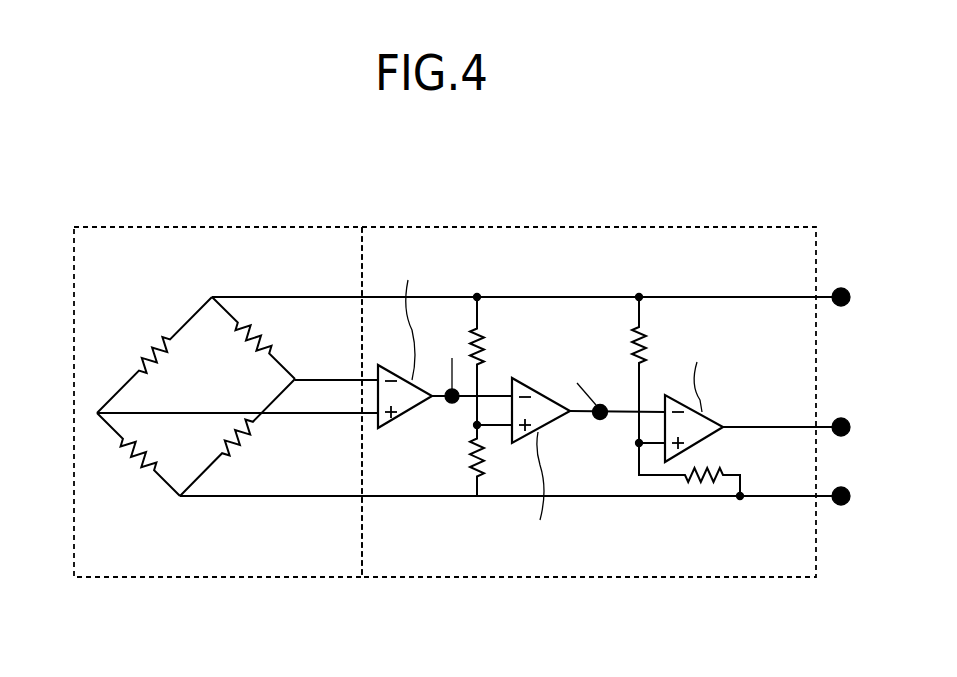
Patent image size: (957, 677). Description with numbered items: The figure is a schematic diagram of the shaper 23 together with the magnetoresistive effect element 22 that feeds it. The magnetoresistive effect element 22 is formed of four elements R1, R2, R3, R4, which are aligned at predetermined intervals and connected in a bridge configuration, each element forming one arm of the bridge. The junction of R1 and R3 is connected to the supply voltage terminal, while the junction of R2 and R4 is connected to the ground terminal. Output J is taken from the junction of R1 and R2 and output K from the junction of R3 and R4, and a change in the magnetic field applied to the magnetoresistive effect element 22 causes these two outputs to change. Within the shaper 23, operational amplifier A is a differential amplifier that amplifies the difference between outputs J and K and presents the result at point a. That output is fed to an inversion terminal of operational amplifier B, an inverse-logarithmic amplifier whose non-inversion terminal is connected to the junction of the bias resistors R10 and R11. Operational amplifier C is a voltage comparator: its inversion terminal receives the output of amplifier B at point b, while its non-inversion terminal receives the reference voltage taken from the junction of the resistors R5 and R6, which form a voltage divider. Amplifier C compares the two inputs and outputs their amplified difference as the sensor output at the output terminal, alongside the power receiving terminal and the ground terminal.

The magnetoresistive effect element 22 is at (218, 368).
The shaper 23 is at (503, 368).
The element R1 is at (154, 355).
The element R2 is at (138, 455).
The element R3 is at (254, 338).
The element R4 is at (237, 437).
The resistor R5 is at (618, 345).
The resistor R6 is at (704, 497).
The bias resistor R10 is at (503, 346).
The bias resistor R11 is at (451, 446).